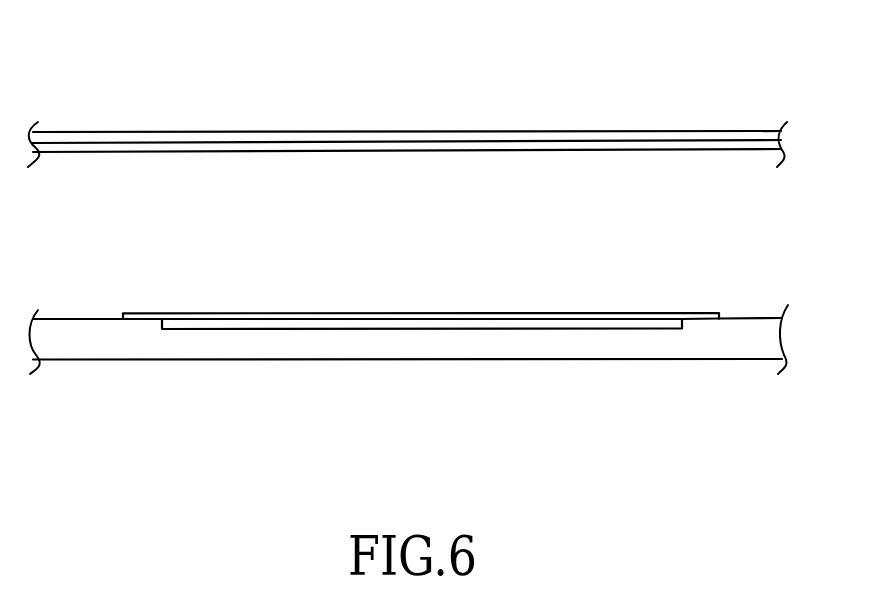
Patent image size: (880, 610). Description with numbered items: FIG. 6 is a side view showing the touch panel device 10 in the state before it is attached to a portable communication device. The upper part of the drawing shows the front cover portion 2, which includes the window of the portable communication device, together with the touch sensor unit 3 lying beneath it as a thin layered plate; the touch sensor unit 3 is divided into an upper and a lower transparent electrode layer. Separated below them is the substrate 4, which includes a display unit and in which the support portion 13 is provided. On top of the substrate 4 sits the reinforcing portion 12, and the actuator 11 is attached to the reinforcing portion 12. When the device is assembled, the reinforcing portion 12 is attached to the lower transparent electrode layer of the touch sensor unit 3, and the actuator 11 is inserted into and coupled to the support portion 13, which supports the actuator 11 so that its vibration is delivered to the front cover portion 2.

The touch panel device 10 is at (612, 24).
The front cover portion 2 is at (675, 131).
The touch sensor unit 3 is at (719, 145).
The substrate 4 is at (395, 344).
The actuator 11 is at (591, 323).
The reinforcing portion 12 is at (507, 312).
The support portion 13 is at (683, 328).